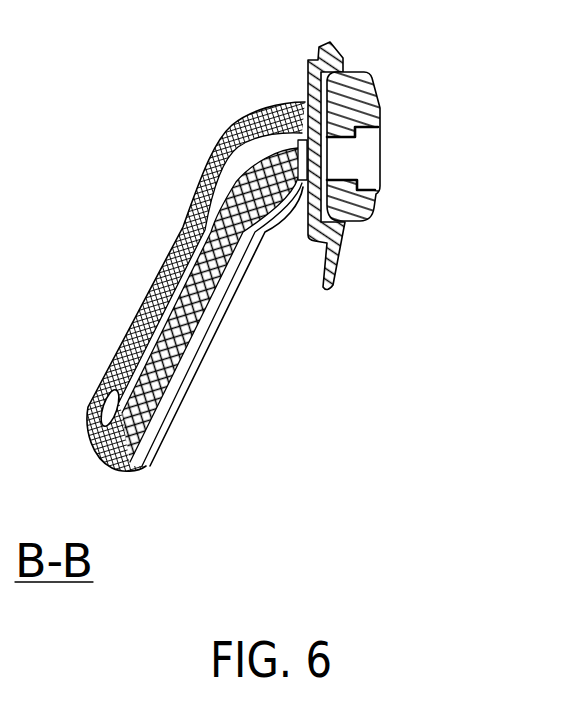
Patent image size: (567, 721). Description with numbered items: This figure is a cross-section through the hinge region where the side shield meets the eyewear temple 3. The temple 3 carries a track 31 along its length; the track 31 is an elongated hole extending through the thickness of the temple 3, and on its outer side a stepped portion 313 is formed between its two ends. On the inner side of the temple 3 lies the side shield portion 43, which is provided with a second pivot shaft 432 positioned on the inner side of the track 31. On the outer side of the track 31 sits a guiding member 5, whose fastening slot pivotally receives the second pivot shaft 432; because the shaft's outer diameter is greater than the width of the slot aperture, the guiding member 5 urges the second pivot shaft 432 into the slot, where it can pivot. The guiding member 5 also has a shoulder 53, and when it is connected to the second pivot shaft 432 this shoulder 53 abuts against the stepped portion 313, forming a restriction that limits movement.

The temple 3 is at (420, 123).
The track 31 is at (347, 133).
The stepped portion 313 is at (374, 183).
The guiding member 5 is at (332, 177).
The shoulder 53 is at (360, 133).
The side shield portion 43 is at (338, 247).
The second pivot shaft 432 is at (237, 132).